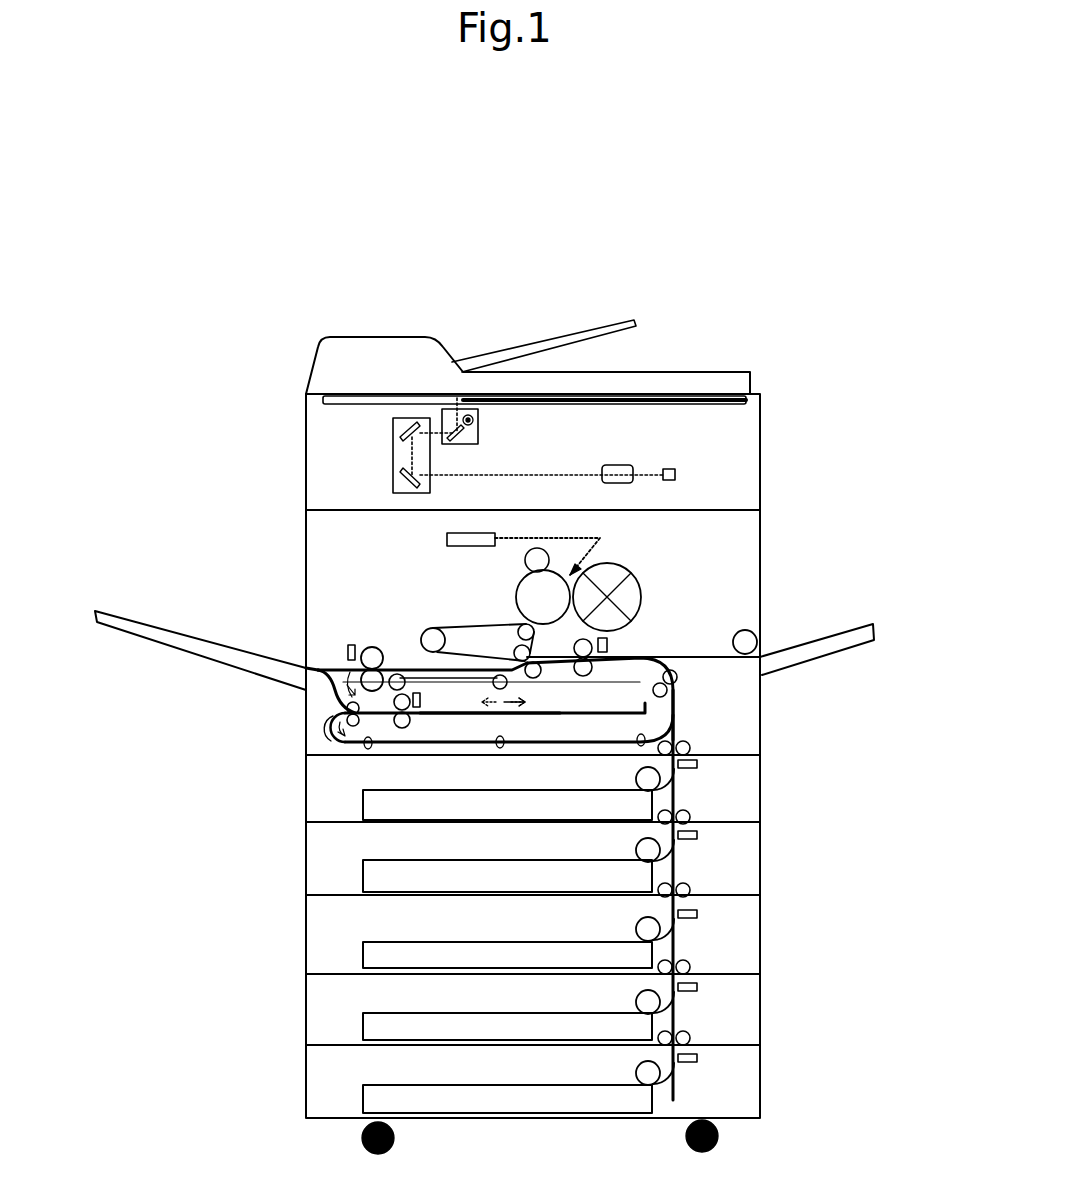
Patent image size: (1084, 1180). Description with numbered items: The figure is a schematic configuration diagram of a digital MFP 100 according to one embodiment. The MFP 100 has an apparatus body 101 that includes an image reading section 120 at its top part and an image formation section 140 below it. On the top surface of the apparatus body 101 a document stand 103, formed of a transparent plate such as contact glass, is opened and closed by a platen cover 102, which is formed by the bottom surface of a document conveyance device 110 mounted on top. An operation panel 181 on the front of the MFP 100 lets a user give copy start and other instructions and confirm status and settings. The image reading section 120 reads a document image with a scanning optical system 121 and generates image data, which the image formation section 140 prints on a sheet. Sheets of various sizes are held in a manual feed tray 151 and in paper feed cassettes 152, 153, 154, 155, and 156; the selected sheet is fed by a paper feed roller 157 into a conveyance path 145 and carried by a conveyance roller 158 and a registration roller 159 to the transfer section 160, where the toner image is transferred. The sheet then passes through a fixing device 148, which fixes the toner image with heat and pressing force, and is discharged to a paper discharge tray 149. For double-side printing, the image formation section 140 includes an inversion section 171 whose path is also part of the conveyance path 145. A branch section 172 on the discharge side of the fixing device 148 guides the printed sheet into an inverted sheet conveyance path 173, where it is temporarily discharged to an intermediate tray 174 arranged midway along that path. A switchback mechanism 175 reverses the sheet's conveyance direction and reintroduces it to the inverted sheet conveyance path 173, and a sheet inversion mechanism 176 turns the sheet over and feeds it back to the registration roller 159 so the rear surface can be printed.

The MFP 100 is at (670, 279).
The apparatus body 101 is at (277, 514).
The platen cover 102 is at (277, 377).
The document stand 103 is at (667, 392).
The document conveyance device 110 is at (378, 338).
The image reading section 120 is at (760, 458).
The scanning optical system 121 is at (753, 430).
The image formation section 140 is at (760, 558).
The conveyance path 145 is at (703, 641).
The fixing device 148 is at (378, 647).
The paper discharge tray 149 is at (118, 622).
The manual feed tray 151 is at (808, 657).
The paper feed cassette 152 is at (363, 797).
The paper feed cassette 153 is at (363, 868).
The paper feed cassette 154 is at (363, 948).
The paper feed cassette 155 is at (363, 1020).
The paper feed cassette 156 is at (363, 1091).
The paper feed roller 157 is at (752, 640).
The conveyance roller 158 is at (678, 680).
The registration roller 159 is at (590, 674).
The transfer section 160 is at (538, 677).
The inversion section 171 is at (693, 720).
The branch section 172 is at (320, 668).
The inverted sheet conveyance path 173 is at (320, 698).
The intermediate tray 174 is at (490, 714).
The switchback mechanism 175 is at (411, 720).
The sheet inversion mechanism 176 is at (338, 731).
The operation panel 181 is at (705, 397).